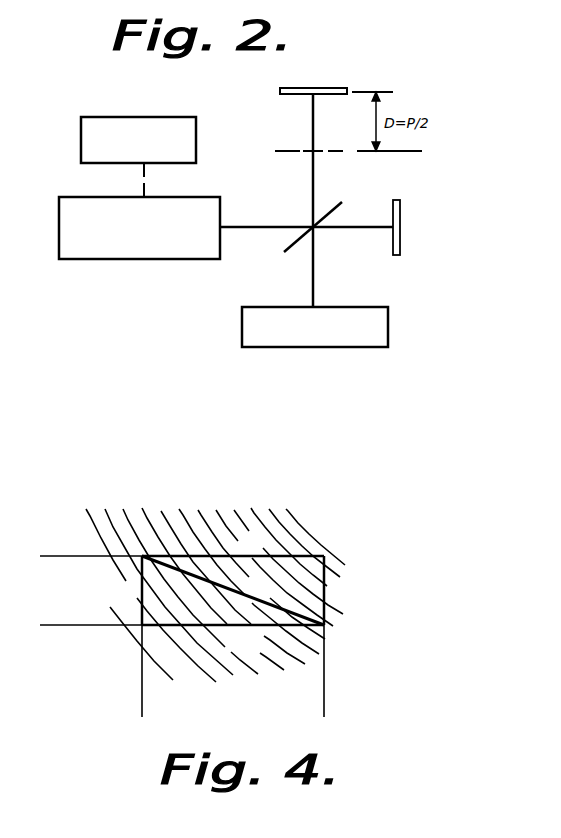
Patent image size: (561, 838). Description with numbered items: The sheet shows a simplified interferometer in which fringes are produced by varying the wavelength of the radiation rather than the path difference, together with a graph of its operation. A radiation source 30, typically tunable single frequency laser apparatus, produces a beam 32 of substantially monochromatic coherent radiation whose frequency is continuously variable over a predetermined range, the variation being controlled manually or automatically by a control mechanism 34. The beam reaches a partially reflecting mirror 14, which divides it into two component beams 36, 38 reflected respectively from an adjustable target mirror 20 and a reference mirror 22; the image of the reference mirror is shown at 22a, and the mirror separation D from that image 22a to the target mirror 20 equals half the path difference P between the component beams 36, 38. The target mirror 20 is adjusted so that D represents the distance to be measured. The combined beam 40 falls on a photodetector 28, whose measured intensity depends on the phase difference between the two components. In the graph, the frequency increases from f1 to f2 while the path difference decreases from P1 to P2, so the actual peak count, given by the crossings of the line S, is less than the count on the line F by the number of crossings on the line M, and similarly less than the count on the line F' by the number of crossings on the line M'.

In FIG. 2, the partially reflecting mirror 14 is at (297, 247).
In FIG. 2, the target mirror 20 is at (281, 95).
In FIG. 2, the reference mirror 22 is at (393, 205).
In FIG. 2, the image of mirror 22 22a is at (285, 151).
In FIG. 2, the photodetector 28 is at (242, 326).
In FIG. 2, the radiation source 30 is at (88, 260).
In FIG. 2, the beam of substantially monochromatic coherent radiation 32 is at (269, 227).
In FIG. 2, the control mechanism 34 is at (103, 118).
In FIG. 2, the component beam 36 is at (311, 177).
In FIG. 2, the component beam 38 is at (347, 232).
In FIG. 2, the combined beam 40 is at (313, 285).
In FIG. 4, the initial path difference P1 is at (91, 548).
In FIG. 4, the final path difference P2 is at (91, 618).
In FIG. 4, the line F is at (233, 548).
In FIG. 4, the line F' is at (233, 639).
In FIG. 4, the line M is at (335, 590).
In FIG. 4, the line M' is at (127, 590).
In FIG. 4, the line S is at (233, 590).
In FIG. 4, the starting frequency f1 is at (153, 677).
In FIG. 4, the ending frequency f2 is at (335, 675).